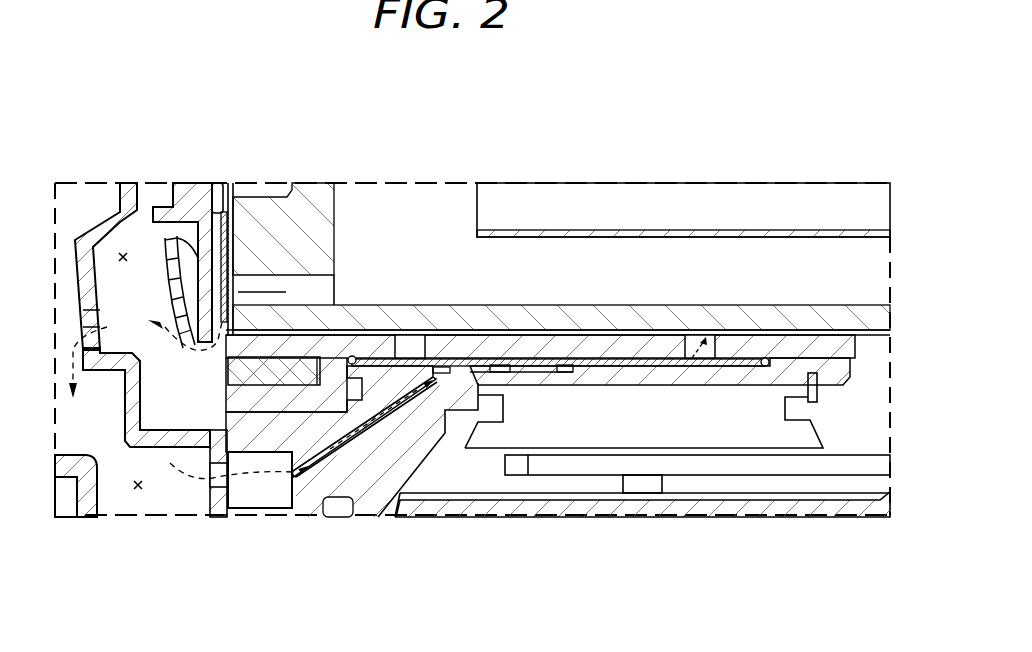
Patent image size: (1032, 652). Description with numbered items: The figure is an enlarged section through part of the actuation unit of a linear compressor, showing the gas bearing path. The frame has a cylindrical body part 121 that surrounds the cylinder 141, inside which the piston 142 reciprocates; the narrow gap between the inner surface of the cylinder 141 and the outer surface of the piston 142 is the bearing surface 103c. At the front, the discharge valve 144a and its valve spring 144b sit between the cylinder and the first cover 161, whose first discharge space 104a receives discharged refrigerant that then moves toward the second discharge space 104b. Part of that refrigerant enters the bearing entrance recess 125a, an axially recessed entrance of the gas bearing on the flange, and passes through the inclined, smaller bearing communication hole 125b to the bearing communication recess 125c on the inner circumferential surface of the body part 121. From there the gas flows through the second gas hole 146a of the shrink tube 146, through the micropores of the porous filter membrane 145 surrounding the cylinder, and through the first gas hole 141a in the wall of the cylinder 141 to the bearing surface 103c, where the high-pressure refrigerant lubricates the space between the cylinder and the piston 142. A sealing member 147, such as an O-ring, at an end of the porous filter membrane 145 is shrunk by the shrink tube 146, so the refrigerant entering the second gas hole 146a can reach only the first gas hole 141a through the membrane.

The first cover 161 is at (98, 232).
The first discharge space 104a is at (122, 250).
The valve spring 144b is at (163, 242).
The discharge valve 144a is at (203, 197).
The piston 142 is at (307, 220).
The first gas hole 141a is at (420, 347).
The porous filter membrane 145 is at (569, 356).
The cylinder 141 is at (558, 269).
The bearing surface 103c is at (613, 333).
The second discharge space 104b is at (138, 490).
The bearing entrance recess 125a is at (282, 493).
The bearing communication hole 125b is at (345, 440).
The bearing communication recess 125c is at (492, 372).
The second gas hole 146a is at (558, 372).
The shrink tube 146 is at (573, 472).
The body part 121 is at (704, 460).
The sealing member 147 is at (770, 367).